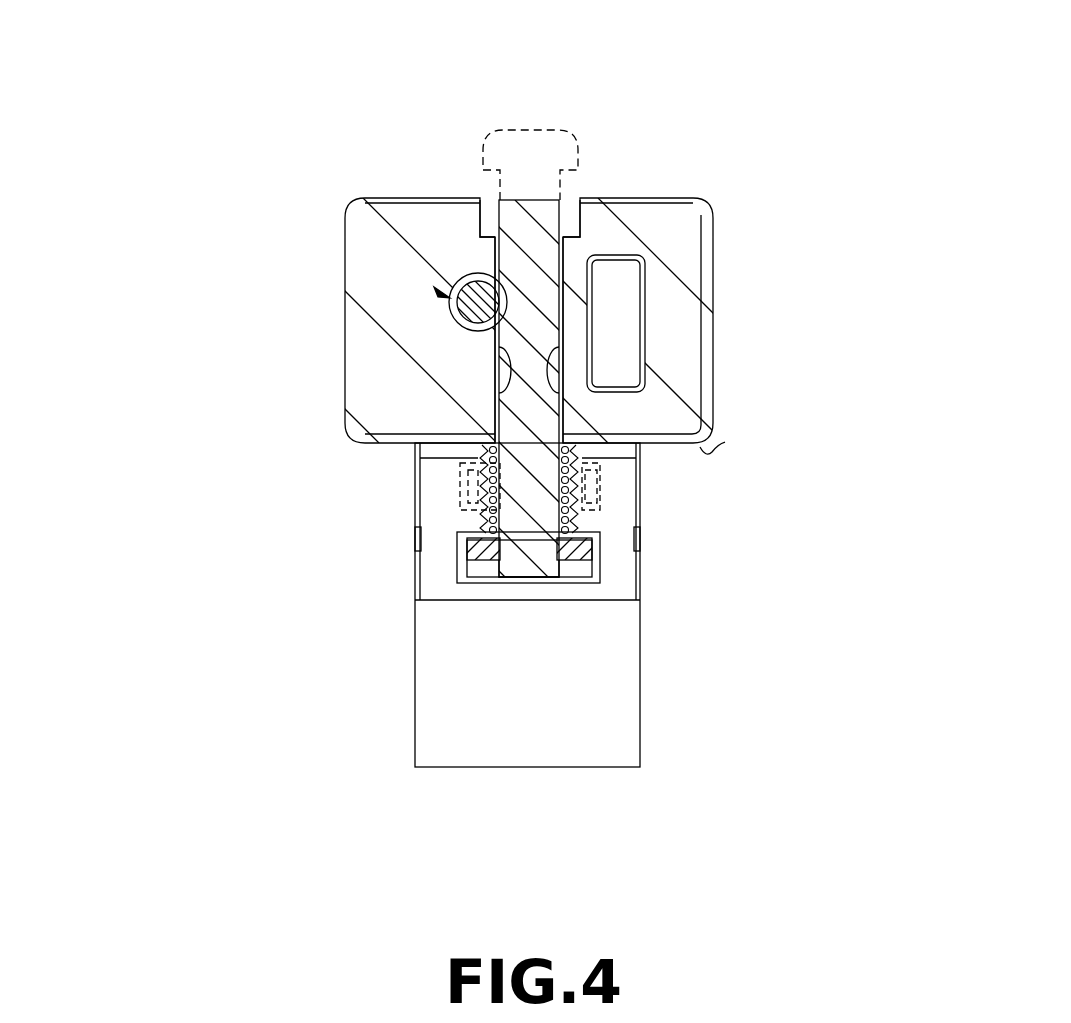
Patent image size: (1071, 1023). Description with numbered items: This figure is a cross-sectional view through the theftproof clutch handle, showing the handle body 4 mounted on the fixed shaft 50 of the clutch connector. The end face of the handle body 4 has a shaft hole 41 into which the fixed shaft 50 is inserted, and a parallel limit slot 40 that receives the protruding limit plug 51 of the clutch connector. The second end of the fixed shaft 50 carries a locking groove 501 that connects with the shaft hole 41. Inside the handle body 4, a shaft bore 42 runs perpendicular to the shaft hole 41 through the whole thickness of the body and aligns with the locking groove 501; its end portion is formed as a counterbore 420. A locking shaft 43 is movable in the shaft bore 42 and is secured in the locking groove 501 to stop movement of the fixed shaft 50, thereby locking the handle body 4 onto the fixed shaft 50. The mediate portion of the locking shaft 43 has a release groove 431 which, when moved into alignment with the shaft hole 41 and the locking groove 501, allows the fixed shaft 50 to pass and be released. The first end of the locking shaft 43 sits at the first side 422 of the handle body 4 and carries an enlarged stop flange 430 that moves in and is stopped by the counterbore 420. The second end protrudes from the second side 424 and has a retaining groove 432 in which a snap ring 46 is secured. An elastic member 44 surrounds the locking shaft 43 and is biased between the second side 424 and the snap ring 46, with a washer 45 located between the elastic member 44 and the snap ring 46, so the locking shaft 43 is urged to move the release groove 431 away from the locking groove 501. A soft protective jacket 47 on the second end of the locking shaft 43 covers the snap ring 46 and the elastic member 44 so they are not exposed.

The handle body 4 is at (668, 233).
The limit slot 40 is at (647, 340).
The shaft hole 41 is at (440, 293).
The shaft bore 42 is at (563, 412).
The locking shaft 43 is at (523, 410).
The elastic member 44 is at (547, 510).
The washer 45 is at (600, 473).
The snap ring 46 is at (598, 502).
The soft protective jacket 47 is at (460, 547).
The fixed shaft 50 is at (447, 297).
The limit plug 51 is at (613, 308).
The counterbore 420 is at (573, 203).
The first side 422 is at (653, 197).
The second side 424 is at (725, 443).
The enlarged stop flange 430 is at (527, 218).
The release groove 431 is at (510, 367).
The retaining groove 432 is at (547, 562).
The locking groove 501 is at (450, 317).